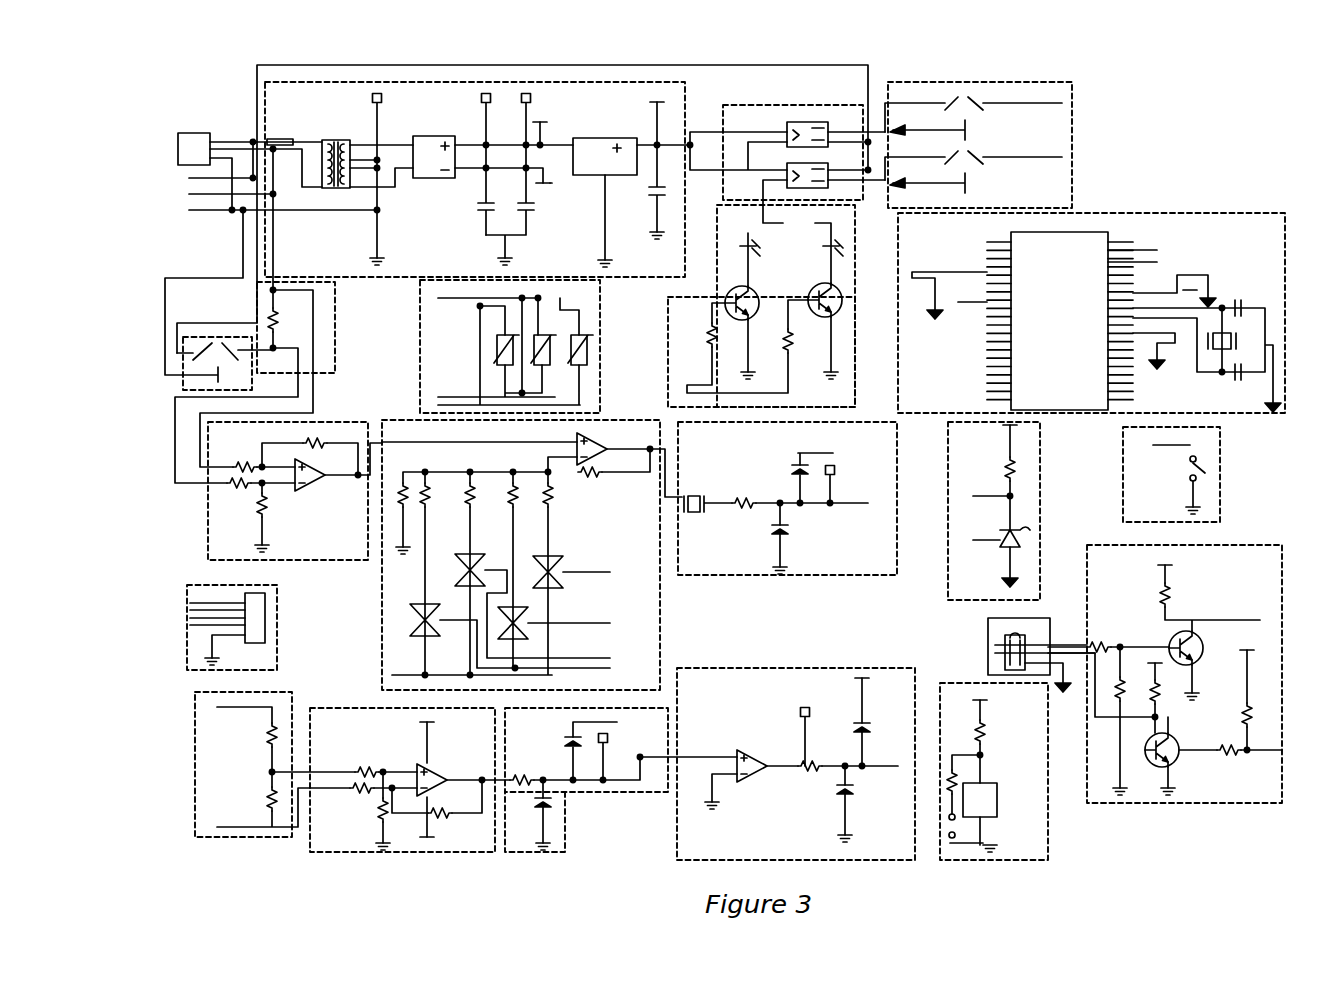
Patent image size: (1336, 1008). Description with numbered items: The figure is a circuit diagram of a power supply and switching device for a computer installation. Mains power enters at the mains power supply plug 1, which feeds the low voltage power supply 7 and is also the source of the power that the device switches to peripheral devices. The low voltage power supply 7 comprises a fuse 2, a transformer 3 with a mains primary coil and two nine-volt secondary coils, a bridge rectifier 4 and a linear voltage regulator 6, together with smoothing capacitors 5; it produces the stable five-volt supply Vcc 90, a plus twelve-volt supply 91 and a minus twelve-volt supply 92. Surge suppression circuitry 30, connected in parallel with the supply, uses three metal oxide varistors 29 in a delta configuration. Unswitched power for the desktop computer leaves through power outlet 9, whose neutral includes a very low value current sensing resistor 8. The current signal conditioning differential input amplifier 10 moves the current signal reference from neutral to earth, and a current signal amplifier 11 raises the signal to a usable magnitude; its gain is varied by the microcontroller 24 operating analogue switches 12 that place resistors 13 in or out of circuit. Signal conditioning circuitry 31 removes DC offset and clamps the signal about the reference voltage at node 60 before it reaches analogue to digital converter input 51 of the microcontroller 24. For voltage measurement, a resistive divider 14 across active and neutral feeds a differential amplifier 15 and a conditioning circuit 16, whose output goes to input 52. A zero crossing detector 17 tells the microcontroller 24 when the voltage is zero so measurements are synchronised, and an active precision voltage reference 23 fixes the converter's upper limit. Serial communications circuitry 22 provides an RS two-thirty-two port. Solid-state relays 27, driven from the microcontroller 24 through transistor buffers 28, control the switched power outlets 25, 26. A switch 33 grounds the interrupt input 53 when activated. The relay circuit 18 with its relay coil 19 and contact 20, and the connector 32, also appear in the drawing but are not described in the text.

The mains power supply plug 1 is at (200, 128).
The fuse 2 is at (288, 138).
The transformer 3 is at (332, 138).
The bridge rectifier 4 is at (428, 135).
The capacitor 5 is at (478, 210).
The linear voltage regulator 6 is at (596, 137).
The low voltage power supply 7 is at (401, 278).
The current sensing resistor 8 is at (280, 335).
The power outlet 9 is at (270, 375).
The current signal conditioning differential input amplifier 10 is at (327, 422).
The current signal amplifier 11 is at (390, 422).
The analogue switches 12 is at (414, 618).
The resistors 13 is at (428, 505).
The resistive divider 14 is at (292, 692).
The differential amplifier 15 is at (370, 708).
The conditioning circuit 16 is at (590, 793).
The zero crossing detector 17 is at (740, 668).
The relay circuit 18 is at (942, 683).
The relay coil 19 is at (990, 782).
The relay contact 20 is at (970, 830).
The serial communications circuitry 22 is at (1122, 546).
The active precision voltage reference 23 is at (1042, 452).
The microcontroller 24 is at (1125, 212).
The switched power outlet 25 is at (1072, 160).
The switched power outlet 26 is at (1072, 110).
The solid-state relays 27 is at (768, 105).
The transistor buffers 28 is at (668, 300).
The metal oxide varistors 29 is at (590, 345).
The surge suppression circuitry 30 is at (603, 410).
The signal conditioning circuitry 31 is at (808, 578).
The connector 32 is at (278, 622).
The switch 33 is at (1222, 492).
The analogue to digital converter input 51 is at (1150, 263).
The input 52 is at (1150, 250).
The interrupt input 53 is at (970, 303).
The reference voltage VAref node 60 is at (798, 453).
The five-volt DC power supply Vcc 90 is at (658, 100).
The +12V supply 91 is at (540, 120).
The −12V supply 92 is at (552, 186).